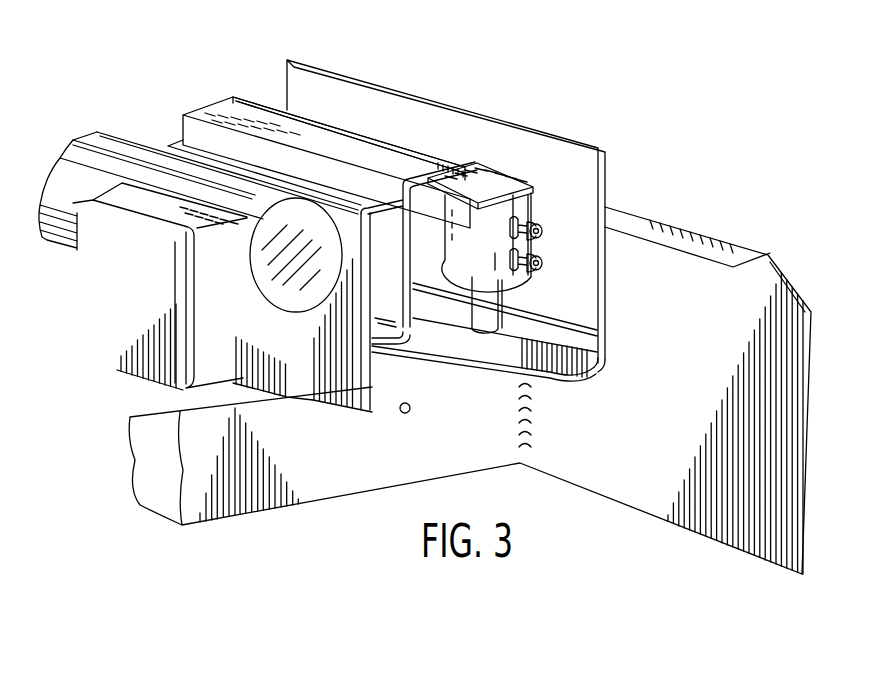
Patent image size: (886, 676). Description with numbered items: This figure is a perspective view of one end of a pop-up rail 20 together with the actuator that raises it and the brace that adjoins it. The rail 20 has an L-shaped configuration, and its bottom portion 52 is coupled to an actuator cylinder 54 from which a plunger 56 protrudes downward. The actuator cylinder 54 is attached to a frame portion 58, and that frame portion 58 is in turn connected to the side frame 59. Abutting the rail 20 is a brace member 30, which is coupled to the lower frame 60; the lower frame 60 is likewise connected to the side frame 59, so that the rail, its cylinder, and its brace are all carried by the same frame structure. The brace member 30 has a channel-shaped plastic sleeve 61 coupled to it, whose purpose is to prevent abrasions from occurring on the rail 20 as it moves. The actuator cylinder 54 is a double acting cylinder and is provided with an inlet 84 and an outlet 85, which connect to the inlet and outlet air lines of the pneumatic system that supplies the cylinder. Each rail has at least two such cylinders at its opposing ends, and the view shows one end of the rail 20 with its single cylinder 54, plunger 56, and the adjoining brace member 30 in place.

The rail 20 is at (607, 168).
The brace member 30 is at (377, 157).
The bottom portion 52 is at (573, 375).
The actuator cylinder 54 is at (500, 278).
The plunger 56 is at (493, 313).
The frame portion 58 is at (495, 177).
The side frame 59 is at (795, 285).
The lower frame 60 is at (347, 467).
The channel-shaped plastic sleeve 61 is at (313, 122).
The inlet 84 is at (542, 226).
The outlet 85 is at (541, 268).